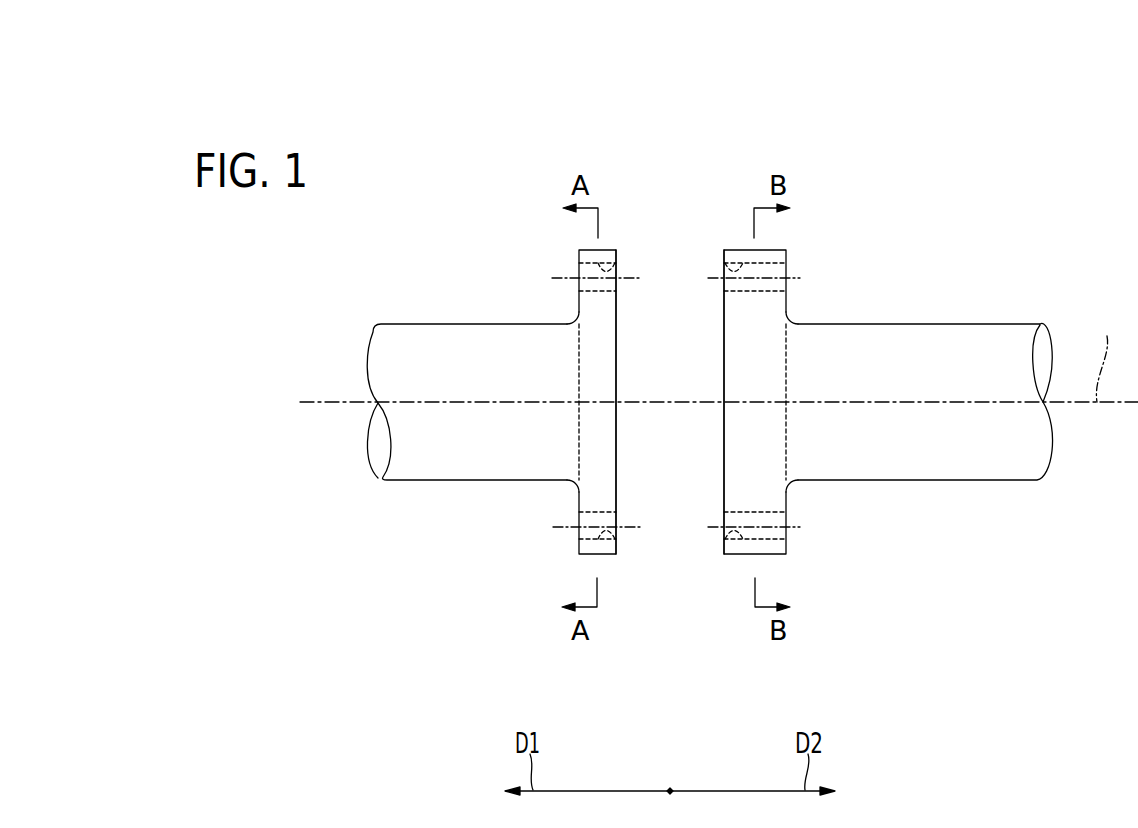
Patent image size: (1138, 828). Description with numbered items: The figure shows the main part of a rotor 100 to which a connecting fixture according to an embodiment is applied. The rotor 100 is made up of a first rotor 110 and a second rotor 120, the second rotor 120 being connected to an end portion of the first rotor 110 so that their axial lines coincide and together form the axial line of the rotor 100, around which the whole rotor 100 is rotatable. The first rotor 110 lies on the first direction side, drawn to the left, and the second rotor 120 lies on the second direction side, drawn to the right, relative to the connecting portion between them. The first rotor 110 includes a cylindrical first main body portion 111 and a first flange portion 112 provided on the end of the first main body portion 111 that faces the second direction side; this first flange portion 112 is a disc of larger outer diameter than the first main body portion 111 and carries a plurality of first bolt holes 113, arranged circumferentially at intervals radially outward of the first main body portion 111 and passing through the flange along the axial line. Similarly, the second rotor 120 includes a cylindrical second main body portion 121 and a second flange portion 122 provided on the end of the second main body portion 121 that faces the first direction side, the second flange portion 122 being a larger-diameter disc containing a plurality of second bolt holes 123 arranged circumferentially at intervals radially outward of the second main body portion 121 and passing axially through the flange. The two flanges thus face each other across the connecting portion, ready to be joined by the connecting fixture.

The rotor 100 is at (394, 144).
The first rotor 110 is at (700, 55).
The first main body portion 111 is at (513, 347).
The first flange portion 112 is at (603, 310).
The first bolt holes 113 is at (616, 262).
The second rotor 120 is at (837, 125).
The second main body portion 121 is at (837, 345).
The second flange portion 122 is at (737, 315).
The second bolt holes 123 is at (727, 258).